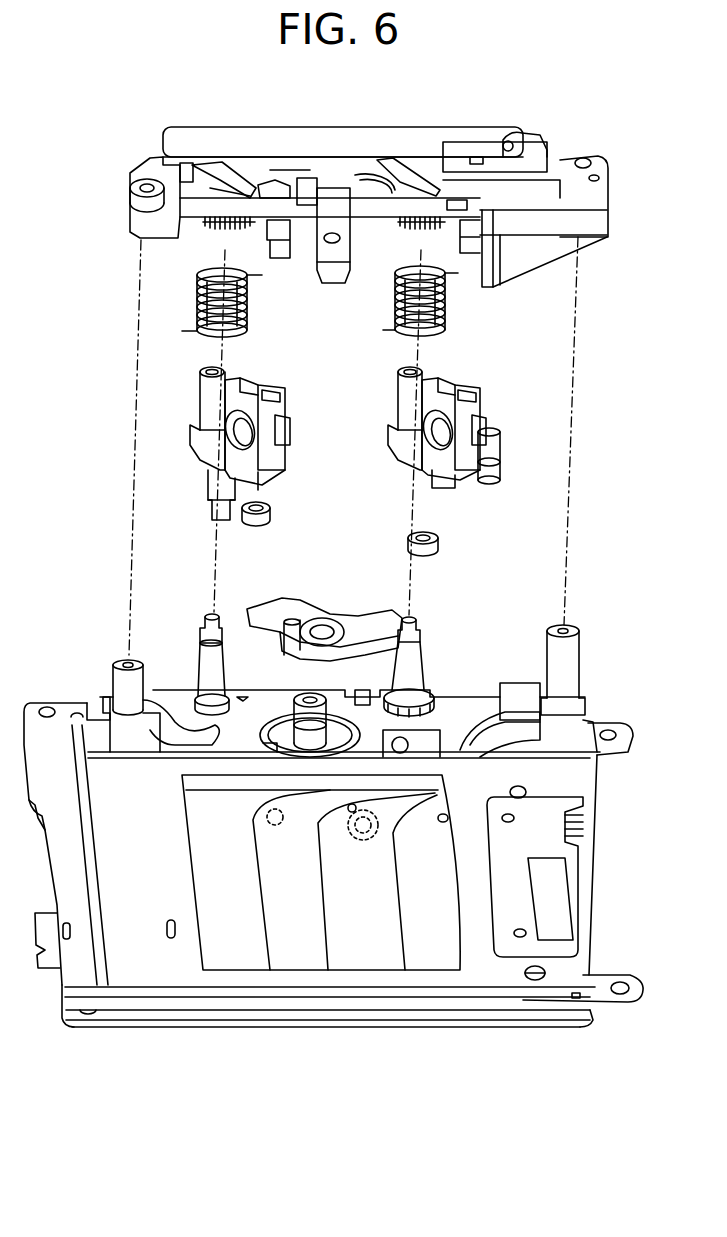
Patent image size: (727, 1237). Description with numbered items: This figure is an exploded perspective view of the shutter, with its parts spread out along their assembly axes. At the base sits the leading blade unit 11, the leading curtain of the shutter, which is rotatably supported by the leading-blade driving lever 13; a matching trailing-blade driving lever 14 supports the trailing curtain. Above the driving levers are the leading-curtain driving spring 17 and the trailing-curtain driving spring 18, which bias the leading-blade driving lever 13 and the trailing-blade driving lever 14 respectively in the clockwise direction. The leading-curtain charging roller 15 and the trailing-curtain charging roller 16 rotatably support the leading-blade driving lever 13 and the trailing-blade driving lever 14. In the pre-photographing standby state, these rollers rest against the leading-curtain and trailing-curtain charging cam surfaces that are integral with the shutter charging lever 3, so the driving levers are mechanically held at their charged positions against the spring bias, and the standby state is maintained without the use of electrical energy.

The shutter charging lever 3 is at (277, 607).
The leading blade unit 11 is at (360, 950).
The leading-blade driving lever 13 is at (283, 398).
The trailing-blade driving lever 14 is at (527, 415).
The leading-curtain charging roller 15 is at (272, 514).
The trailing-curtain charging roller 16 is at (440, 546).
The leading-curtain driving spring 17 is at (250, 308).
The trailing-curtain driving spring 18 is at (448, 312).